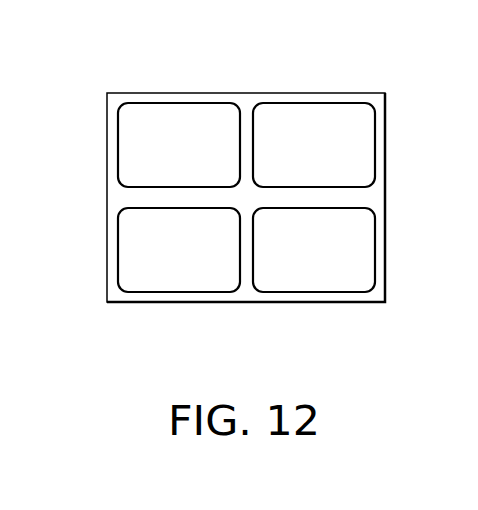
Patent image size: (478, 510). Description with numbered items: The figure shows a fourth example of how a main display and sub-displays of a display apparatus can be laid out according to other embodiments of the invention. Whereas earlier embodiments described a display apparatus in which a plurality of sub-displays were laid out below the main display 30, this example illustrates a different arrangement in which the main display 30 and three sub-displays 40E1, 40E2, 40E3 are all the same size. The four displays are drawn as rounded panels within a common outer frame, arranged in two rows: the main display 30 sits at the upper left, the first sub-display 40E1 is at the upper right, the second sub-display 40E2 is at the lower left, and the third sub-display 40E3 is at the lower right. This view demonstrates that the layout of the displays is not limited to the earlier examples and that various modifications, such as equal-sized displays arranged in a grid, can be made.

The main display 30 is at (178, 118).
The sub-display 40E1 is at (315, 118).
The sub-display 40E2 is at (180, 280).
The sub-display 40E3 is at (318, 280).